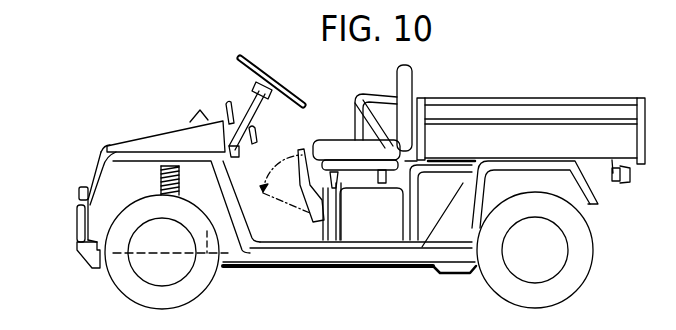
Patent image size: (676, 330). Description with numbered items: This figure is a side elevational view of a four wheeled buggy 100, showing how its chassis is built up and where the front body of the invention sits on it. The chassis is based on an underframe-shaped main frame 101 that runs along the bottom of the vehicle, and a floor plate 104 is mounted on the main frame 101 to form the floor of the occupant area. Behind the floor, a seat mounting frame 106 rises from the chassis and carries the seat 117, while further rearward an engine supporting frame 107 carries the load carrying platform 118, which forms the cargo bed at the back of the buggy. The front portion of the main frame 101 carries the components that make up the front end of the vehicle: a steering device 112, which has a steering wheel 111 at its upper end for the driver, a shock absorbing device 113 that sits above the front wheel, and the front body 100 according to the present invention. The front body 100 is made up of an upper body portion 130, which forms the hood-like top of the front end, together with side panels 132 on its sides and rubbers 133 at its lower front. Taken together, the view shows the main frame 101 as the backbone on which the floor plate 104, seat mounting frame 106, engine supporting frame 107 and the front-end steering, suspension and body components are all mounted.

The four wheeled buggy 100 is at (109, 134).
The main frame 101 is at (371, 267).
The floor plate 104 is at (300, 242).
The seat mounting frame 106 is at (362, 188).
The engine supporting frame 107 is at (435, 172).
The steering wheel 111 is at (274, 88).
The steering device 112 is at (250, 112).
The shock absorbing device 113 is at (160, 180).
The seat 117 is at (338, 140).
The load carrying platform 118 is at (570, 98).
The upper body portion 130 is at (175, 136).
The side panels 132 is at (99, 165).
The rubbers 133 is at (108, 213).